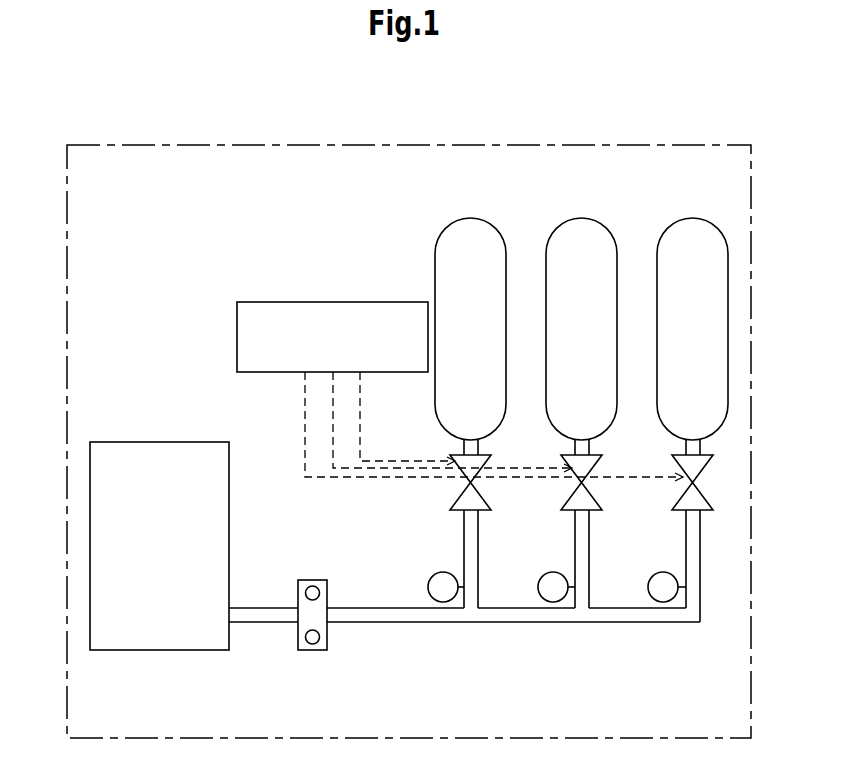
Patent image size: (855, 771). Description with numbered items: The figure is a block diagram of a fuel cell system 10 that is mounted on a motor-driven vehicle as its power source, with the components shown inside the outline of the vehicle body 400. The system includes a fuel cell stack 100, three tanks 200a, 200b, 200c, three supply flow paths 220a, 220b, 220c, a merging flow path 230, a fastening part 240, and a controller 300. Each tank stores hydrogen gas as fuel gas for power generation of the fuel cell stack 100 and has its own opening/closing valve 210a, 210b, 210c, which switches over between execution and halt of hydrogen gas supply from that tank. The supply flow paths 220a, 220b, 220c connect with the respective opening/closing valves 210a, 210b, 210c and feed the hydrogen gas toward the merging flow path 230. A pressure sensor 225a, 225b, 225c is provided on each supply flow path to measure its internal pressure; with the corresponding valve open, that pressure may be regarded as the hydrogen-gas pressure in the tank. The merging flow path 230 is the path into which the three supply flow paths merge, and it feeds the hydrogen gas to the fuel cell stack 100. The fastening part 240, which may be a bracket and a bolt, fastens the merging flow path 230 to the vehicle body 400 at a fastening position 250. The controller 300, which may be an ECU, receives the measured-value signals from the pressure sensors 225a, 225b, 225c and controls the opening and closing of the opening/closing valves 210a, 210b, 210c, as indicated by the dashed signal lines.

The fuel cell system 10 is at (122, 300).
The fuel cell stack 100 is at (160, 442).
The tank 200a is at (692, 218).
The tank 200b is at (581, 218).
The tank 200c is at (471, 218).
The opening/closing valve 210a is at (686, 450).
The opening/closing valve 210b is at (575, 450).
The opening/closing valve 210c is at (464, 450).
The supply flow path 220a is at (686, 522).
The supply flow path 220b is at (575, 522).
The supply flow path 220c is at (464, 522).
The pressure sensor 225a is at (663, 572).
The pressure sensor 225b is at (553, 572).
The pressure sensor 225c is at (443, 572).
The merging flow path 230 is at (355, 608).
The fastening part 240 is at (312, 580).
The fastening position 250 is at (337, 657).
The controller 300 is at (333, 302).
The vehicle body 400 is at (205, 145).